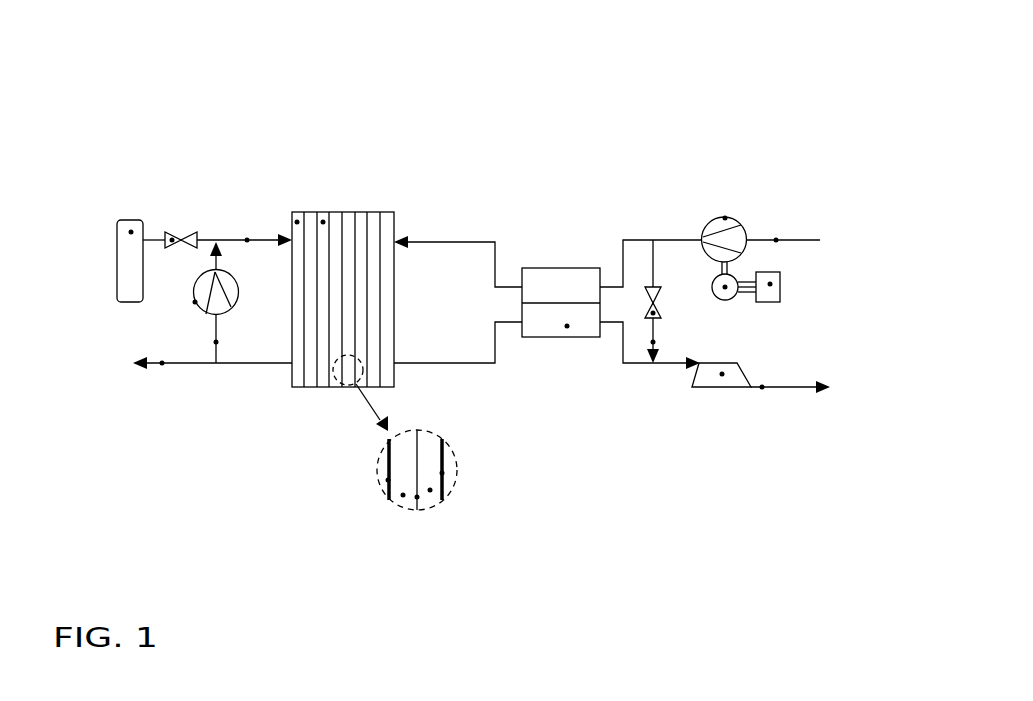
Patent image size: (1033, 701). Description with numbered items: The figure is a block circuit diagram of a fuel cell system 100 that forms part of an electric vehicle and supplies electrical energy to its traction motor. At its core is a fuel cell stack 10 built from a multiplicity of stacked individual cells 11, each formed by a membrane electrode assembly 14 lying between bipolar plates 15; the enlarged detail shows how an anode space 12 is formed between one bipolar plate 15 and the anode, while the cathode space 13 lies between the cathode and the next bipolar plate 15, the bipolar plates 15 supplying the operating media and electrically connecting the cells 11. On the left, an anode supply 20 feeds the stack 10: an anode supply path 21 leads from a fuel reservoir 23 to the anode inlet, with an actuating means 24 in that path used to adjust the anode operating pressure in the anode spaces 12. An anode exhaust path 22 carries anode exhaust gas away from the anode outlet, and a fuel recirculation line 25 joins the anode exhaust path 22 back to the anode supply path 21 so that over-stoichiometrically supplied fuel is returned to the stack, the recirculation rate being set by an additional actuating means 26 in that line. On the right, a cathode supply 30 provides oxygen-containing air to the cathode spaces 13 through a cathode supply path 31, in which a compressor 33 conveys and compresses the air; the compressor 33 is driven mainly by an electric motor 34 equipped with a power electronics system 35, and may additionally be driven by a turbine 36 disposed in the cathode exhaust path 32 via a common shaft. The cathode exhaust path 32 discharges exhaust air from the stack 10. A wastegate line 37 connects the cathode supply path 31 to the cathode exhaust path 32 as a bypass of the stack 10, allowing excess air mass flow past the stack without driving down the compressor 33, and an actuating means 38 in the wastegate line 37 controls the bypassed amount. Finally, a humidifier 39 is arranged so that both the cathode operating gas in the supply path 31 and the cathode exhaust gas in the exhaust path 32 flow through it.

The fuel cell system 100 is at (612, 76).
The fuel cell stack 10 is at (325, 180).
The individual cells 11 is at (323, 222).
The anode space 12 is at (403, 495).
The cathode space 13 is at (430, 490).
The membrane electrode assembly 14 is at (417, 497).
The bipolar plates 15 is at (388, 480).
The anode supply 20 is at (160, 138).
The anode supply path 21 is at (247, 240).
The anode exhaust path 22 is at (162, 363).
The fuel reservoir 23 is at (131, 232).
The actuating means 24 is at (172, 240).
The fuel recirculation line 25 is at (216, 342).
The additional actuating means 26 is at (195, 302).
The cathode supply 30 is at (590, 192).
The cathode supply path 31 is at (776, 240).
The cathode exhaust path 32 is at (762, 387).
The compressor 33 is at (725, 218).
The electric motor 34 is at (725, 287).
The power electronics system 35 is at (770, 284).
The turbine 36 is at (722, 374).
The wastegate line 37 is at (653, 342).
The actuating means 38 is at (653, 313).
The humidifier 39 is at (567, 326).